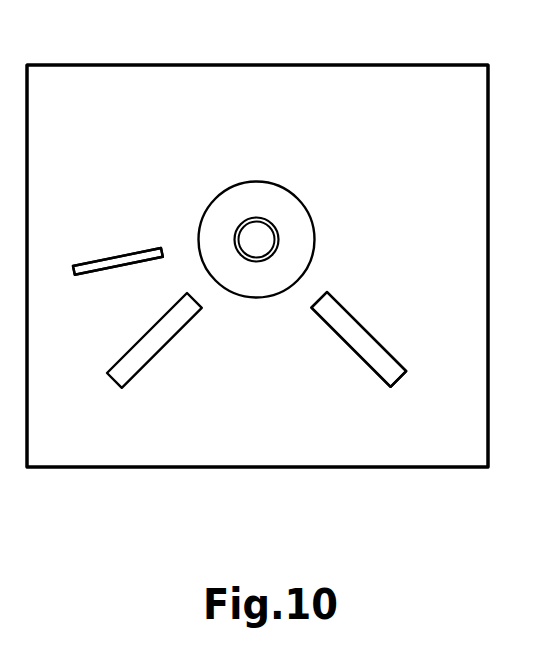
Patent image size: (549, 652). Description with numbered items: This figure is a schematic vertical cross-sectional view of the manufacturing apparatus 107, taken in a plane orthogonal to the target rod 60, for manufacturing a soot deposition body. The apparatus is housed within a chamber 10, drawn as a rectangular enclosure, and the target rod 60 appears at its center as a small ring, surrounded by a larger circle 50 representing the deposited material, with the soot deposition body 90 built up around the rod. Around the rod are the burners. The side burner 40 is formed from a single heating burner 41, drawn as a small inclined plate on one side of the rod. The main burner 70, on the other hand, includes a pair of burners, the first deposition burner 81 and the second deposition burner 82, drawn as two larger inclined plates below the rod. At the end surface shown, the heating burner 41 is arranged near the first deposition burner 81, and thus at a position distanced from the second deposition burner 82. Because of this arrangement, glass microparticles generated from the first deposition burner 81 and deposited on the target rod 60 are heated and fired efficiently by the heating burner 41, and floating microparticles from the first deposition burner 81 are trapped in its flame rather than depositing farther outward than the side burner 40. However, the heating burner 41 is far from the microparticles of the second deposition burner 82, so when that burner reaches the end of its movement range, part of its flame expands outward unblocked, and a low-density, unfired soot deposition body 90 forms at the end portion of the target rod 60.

The manufacturing apparatus 107 is at (73, 21).
The chamber 10 is at (253, 65).
The side burner 40 is at (135, 216).
The heating burner 41 is at (132, 255).
The susceptor 50 is at (281, 187).
The target rod 60 is at (243, 222).
The main burner 70 is at (375, 303).
The first deposition burner 81 is at (132, 348).
The second deposition burner 82 is at (382, 347).
The soot deposition body 90 is at (279, 239).